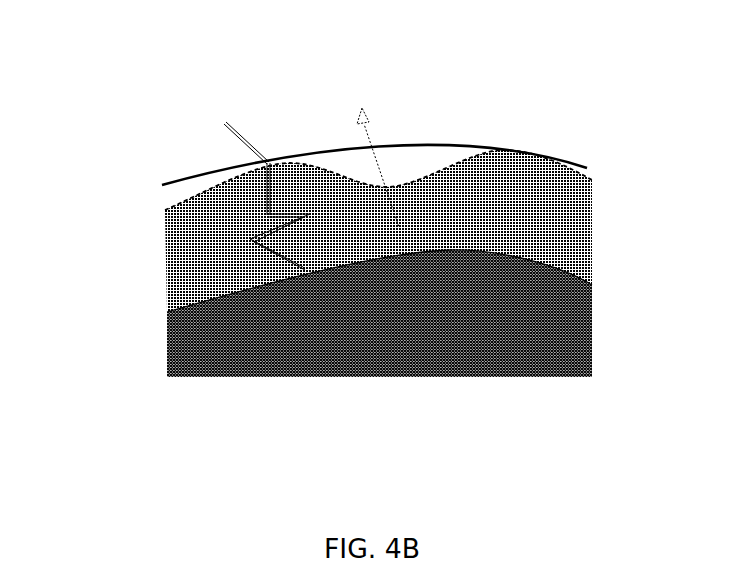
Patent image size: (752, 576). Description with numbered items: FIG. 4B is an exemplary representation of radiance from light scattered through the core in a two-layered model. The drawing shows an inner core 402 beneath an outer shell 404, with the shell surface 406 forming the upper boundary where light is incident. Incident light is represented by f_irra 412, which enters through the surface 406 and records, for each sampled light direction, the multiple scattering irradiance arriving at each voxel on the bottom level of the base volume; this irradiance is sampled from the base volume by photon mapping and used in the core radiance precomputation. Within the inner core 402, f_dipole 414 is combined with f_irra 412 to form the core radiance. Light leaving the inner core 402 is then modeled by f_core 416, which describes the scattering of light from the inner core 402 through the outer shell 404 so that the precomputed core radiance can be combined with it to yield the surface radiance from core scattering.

The inner core 402 is at (575, 345).
The outer shell 404 is at (189, 277).
The surface 406 is at (536, 143).
The f_irra 412 is at (246, 110).
The f_dipole 414 is at (291, 328).
The f_core 416 is at (386, 118).